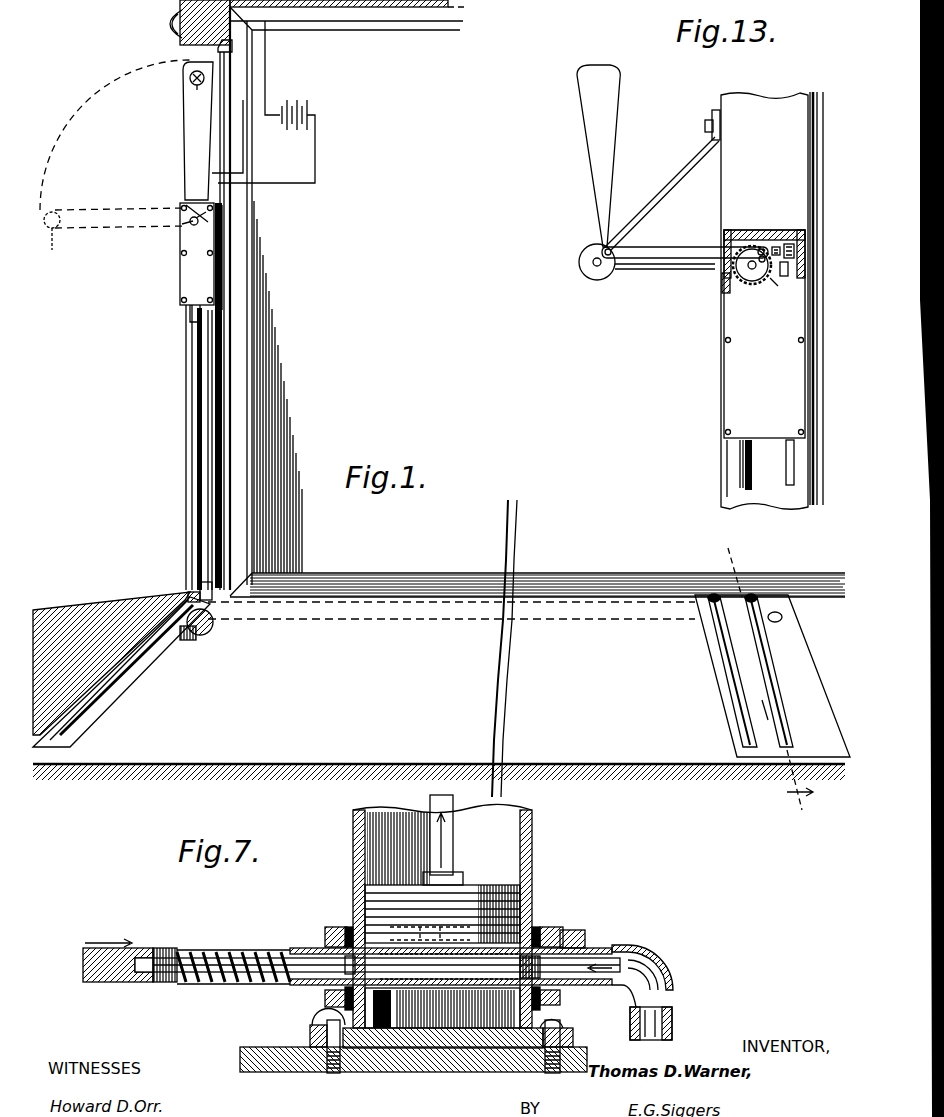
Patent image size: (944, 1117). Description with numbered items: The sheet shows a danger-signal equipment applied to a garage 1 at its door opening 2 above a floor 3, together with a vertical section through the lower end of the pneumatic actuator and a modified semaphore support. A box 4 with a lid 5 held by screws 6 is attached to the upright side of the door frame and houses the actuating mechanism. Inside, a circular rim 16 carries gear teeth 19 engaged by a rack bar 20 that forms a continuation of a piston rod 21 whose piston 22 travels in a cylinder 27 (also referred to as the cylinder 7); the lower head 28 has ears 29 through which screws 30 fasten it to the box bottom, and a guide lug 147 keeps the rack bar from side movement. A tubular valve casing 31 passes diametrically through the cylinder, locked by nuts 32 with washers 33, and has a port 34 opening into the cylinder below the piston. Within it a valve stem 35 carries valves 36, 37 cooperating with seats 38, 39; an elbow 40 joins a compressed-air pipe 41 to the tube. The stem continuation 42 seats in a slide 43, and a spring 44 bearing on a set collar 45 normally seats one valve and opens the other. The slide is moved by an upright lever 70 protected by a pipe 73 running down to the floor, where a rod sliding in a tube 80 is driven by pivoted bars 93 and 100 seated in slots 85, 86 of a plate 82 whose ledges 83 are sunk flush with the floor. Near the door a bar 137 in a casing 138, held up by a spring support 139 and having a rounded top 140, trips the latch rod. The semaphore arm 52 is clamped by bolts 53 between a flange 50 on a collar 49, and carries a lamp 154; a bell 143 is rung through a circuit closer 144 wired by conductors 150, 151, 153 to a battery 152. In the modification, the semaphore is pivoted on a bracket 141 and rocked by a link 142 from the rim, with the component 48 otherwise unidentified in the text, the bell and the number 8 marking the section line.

In FIG. 1, the garage 1 is at (346, 298).
In FIG. 1, the door opening 2 is at (233, 413).
In FIG. 13, the door opening 2 is at (775, 492).
In FIG. 1, the floor 3 is at (439, 723).
In FIG. 1, the box or casing 4 is at (222, 265).
In FIG. 13, the box or casing 4 is at (745, 232).
In FIG. 7, the box or casing 4 is at (470, 1050).
In FIG. 1, the lid or cover 5 is at (183, 272).
In FIG. 13, the lid or cover 5 is at (764, 334).
In FIG. 1, the screws 6 is at (192, 302).
In FIG. 13, the screws 6 is at (800, 430).
In FIG. 13, the cylinder 7 is at (742, 285).
In FIG. 1, the section line 8— 8 is at (767, 681).
In FIG. 13, the circular rim 16 is at (763, 238).
In FIG. 13, the gear teeth 19 is at (765, 282).
In FIG. 13, the rack bar 20 is at (775, 280).
In FIG. 7, the piston rod 21 is at (453, 830).
In FIG. 7, the piston 22 is at (485, 885).
In FIG. 7, the cylinder 27 is at (533, 830).
In FIG. 7, the head 28 is at (430, 1032).
In FIG. 7, the ears 29 is at (310, 1037).
In FIG. 7, the screws 30 is at (333, 1075).
In FIG. 7, the tubular valve casing 31 is at (470, 985).
In FIG. 7, the nuts 32 is at (335, 930).
In FIG. 7, the washers 33 is at (348, 928).
In FIG. 7, the port 34 is at (430, 980).
In FIG. 7, the valve stem 35 is at (390, 1048).
In FIG. 7, the valve 36 is at (578, 936).
In FIG. 7, the valve 37 is at (330, 1000).
In FIG. 7, the valve seat 38 is at (500, 985).
In FIG. 7, the valve seat 39 is at (419, 932).
In FIG. 7, the elbow 40 is at (655, 968).
In FIG. 1, the pipe 41 is at (215, 460).
In FIG. 13, the pipe 41 is at (790, 462).
In FIG. 7, the pipe 41 is at (673, 1035).
In FIG. 7, the continuation 42 is at (208, 985).
In FIG. 7, the slide 43 is at (108, 980).
In FIG. 7, the spring 44 is at (210, 948).
In FIG. 7, the set collar 45 is at (160, 947).
In FIG. 1, the arm 48 is at (192, 225).
In FIG. 1, the collar 49 is at (198, 230).
In FIG. 1, the radial flange 50 is at (196, 205).
In FIG. 1, the semaphore arm 52 is at (190, 136).
In FIG. 13, the semaphore arm 52 is at (590, 168).
In FIG. 1, the bolts 53 is at (190, 220).
In FIG. 1, the upright lever 70 is at (206, 590).
In FIG. 1, the protecting pipe or casing 73 is at (192, 397).
In FIG. 13, the protecting pipe or casing 73 is at (738, 466).
In FIG. 1, the tube 80 is at (297, 624).
In FIG. 1, the plate 82 is at (786, 709).
In FIG. 1, the marginal ledges 83 is at (810, 670).
In FIG. 1, the slot 85 is at (775, 718).
In FIG. 1, the slot 86 is at (730, 697).
In FIG. 1, the bar 93 is at (753, 596).
In FIG. 1, the bar 100 is at (716, 596).
In FIG. 1, the bar 137 is at (180, 635).
In FIG. 1, the casing 138 is at (120, 690).
In FIG. 1, the spring support 139 is at (203, 640).
In FIG. 1, the rounded top 140 is at (190, 600).
In FIG. 13, the bracket 141 is at (668, 195).
In FIG. 13, the link 142 is at (693, 247).
In FIG. 1, the bell 143 is at (166, 30).
In FIG. 13, the circuit closer 144 is at (790, 240).
In FIG. 13, the guide lug 147 is at (790, 268).
In FIG. 1, the conductor 150 is at (243, 157).
In FIG. 1, the conductor 151 is at (315, 156).
In FIG. 1, the battery 152 is at (307, 110).
In FIG. 1, the conductor 153 is at (265, 57).
In FIG. 1, the electric lamp 154 is at (190, 80).